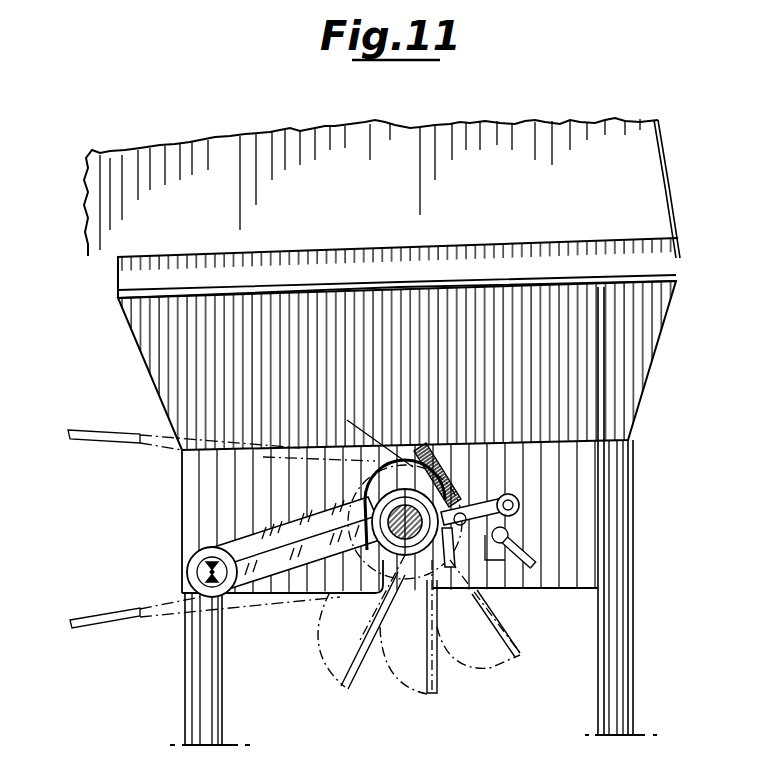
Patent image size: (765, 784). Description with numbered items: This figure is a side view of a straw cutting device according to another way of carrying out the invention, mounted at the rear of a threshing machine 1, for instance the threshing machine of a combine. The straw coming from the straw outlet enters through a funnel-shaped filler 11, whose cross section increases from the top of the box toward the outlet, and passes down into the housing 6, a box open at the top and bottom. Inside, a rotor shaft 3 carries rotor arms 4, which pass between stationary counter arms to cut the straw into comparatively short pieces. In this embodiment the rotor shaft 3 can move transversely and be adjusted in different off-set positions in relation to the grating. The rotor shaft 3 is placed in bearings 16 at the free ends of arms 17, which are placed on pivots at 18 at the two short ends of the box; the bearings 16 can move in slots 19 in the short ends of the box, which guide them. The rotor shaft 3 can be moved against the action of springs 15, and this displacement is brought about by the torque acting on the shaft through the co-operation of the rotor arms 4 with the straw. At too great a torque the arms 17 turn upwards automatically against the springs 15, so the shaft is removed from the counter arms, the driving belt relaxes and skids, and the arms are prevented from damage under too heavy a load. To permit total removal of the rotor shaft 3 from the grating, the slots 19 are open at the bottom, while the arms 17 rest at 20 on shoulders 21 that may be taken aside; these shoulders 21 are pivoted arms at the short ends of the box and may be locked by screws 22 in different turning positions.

The threshing machine 1 is at (527, 133).
The rotor shaft 3 is at (417, 600).
The rotor arms 4 is at (498, 665).
The housing 6 is at (587, 528).
The funnel-shaped filler 11 is at (643, 401).
The springs 15 is at (445, 460).
The bearings 16 is at (362, 492).
The arms 17 is at (250, 583).
The pivots 18 is at (200, 572).
The slots 19 is at (388, 462).
The resting points of the arms 20 is at (463, 488).
The shoulders 21 is at (466, 588).
The screws 22 is at (483, 497).